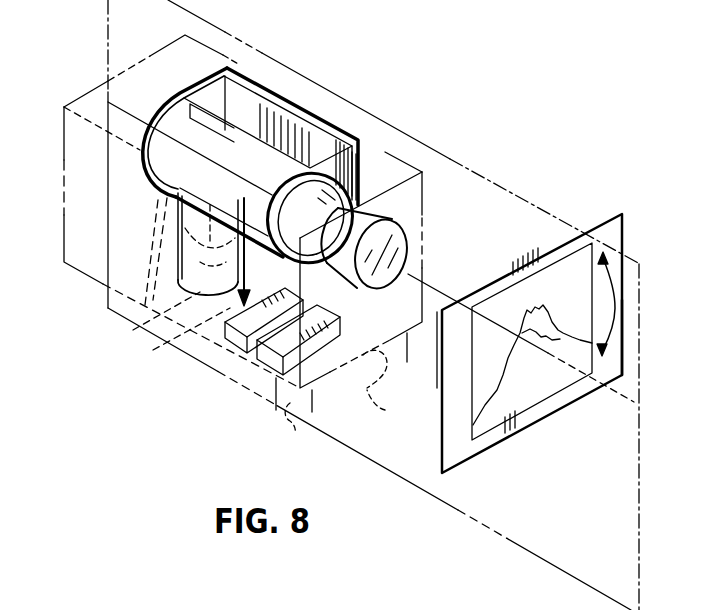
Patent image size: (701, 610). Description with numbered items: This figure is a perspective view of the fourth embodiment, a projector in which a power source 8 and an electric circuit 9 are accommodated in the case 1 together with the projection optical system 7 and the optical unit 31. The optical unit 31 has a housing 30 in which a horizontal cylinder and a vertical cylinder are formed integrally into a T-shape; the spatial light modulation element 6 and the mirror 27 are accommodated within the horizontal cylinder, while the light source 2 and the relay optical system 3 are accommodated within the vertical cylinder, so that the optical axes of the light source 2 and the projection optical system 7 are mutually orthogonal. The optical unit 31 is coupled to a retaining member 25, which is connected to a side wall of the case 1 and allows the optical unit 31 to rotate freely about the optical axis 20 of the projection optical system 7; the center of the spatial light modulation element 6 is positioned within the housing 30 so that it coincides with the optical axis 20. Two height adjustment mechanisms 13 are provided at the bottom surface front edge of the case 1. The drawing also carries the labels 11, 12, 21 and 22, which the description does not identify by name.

The case 1 is at (398, 164).
The light source 2 is at (184, 343).
The relay optical system 3 is at (160, 325).
The spatial light modulation element 6 is at (318, 112).
The projection optical system 7 is at (363, 205).
The power source 8 is at (233, 339).
The electric circuit 9 is at (266, 361).
The display screen 11 is at (608, 228).
The display image 12 is at (570, 270).
The height adjustment mechanisms 13 is at (300, 440).
The optical axis 20 is at (620, 393).
The cylindrical member 21 is at (243, 268).
The base plate 22 is at (492, 509).
The retaining member 25 is at (345, 160).
The mirror 27 is at (142, 251).
The housing 30 is at (228, 132).
The optical unit 31 is at (145, 206).